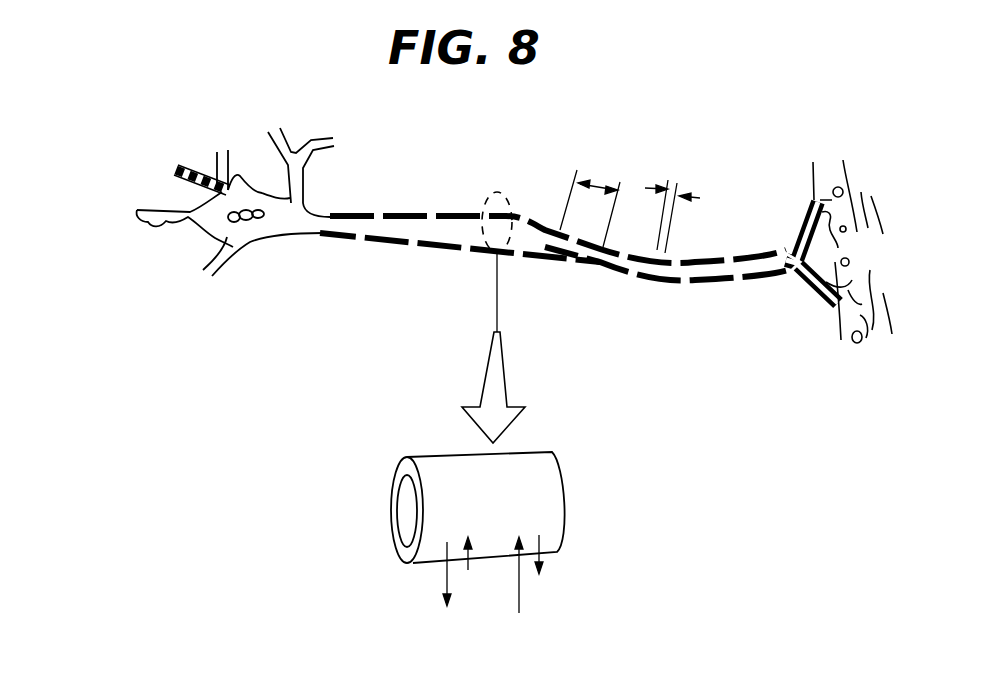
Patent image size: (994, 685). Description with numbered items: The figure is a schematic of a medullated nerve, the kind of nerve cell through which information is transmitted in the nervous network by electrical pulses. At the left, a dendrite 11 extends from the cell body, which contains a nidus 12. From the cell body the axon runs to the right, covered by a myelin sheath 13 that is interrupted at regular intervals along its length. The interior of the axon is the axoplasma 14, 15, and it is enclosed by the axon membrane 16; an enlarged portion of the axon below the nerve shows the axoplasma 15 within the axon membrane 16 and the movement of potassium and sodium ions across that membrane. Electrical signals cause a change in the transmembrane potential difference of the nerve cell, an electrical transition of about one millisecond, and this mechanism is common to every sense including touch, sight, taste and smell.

The dendrite 11 is at (142, 228).
The nidus 12 is at (268, 215).
The myelin sheath 13 is at (345, 237).
The axoplasma 14 is at (655, 283).
The axoplasma 15 is at (405, 517).
The axon membrane 16 is at (416, 551).